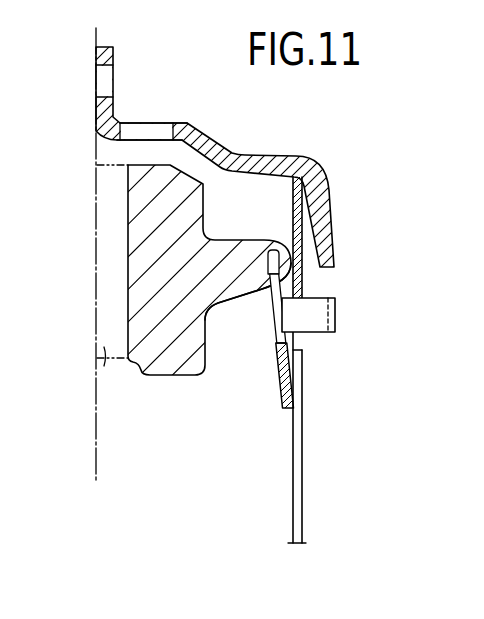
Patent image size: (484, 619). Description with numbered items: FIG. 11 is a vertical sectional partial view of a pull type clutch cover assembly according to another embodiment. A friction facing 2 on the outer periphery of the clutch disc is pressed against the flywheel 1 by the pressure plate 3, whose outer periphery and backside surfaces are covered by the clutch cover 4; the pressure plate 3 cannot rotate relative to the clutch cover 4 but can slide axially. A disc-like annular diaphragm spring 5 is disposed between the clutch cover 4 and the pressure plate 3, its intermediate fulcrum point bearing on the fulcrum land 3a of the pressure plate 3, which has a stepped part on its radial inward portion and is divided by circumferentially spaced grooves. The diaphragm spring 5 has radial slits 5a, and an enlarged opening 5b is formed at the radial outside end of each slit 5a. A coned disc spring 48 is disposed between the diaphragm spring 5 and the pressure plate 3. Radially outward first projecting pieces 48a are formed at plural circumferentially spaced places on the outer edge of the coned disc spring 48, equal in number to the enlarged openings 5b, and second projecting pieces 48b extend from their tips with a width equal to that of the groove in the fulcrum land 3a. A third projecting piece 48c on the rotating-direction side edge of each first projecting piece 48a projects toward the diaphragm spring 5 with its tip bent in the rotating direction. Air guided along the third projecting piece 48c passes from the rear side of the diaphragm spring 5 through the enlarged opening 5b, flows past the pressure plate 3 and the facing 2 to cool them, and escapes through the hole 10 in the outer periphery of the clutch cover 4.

The flywheel 1 is at (80, 447).
The friction facing 2 is at (107, 367).
The pressure plate 3 is at (242, 291).
The fulcrum land 3a is at (236, 290).
The clutch cover 4 is at (242, 165).
The diaphragm spring 5 is at (301, 346).
The radial slit 5a is at (297, 472).
The enlarged opening 5b is at (305, 340).
The hole 10 is at (144, 130).
The coned disc spring 48 is at (307, 316).
The first projecting piece 48a is at (272, 313).
The second projecting piece 48b is at (262, 258).
The third projecting piece 48c is at (312, 322).